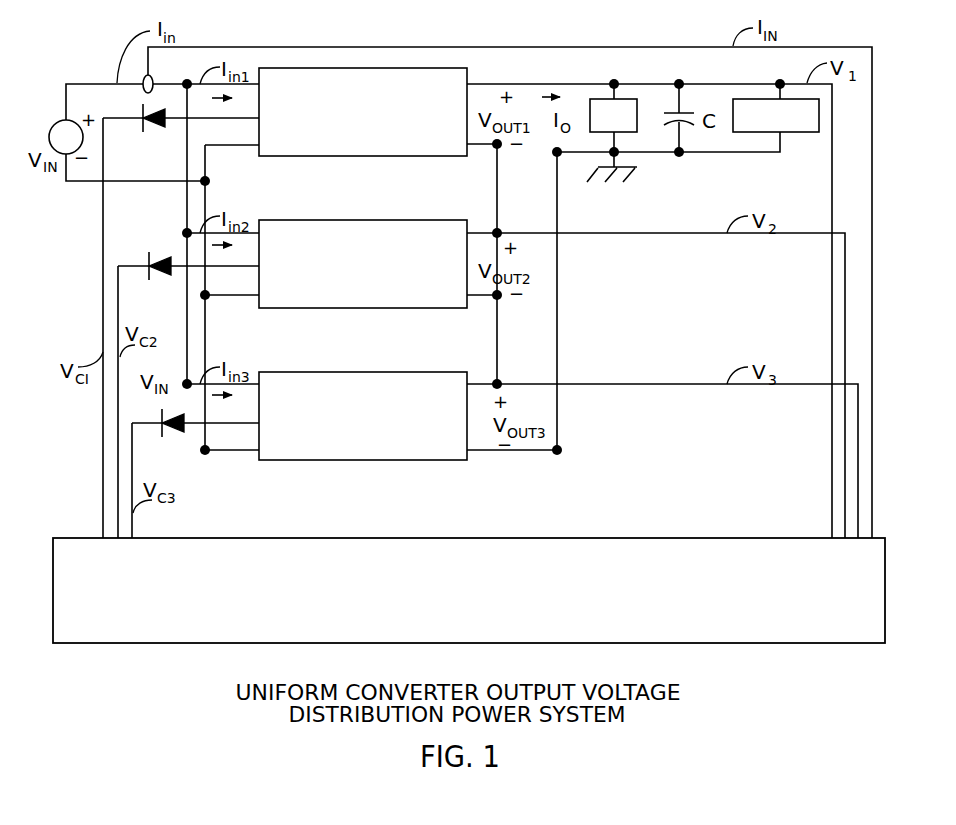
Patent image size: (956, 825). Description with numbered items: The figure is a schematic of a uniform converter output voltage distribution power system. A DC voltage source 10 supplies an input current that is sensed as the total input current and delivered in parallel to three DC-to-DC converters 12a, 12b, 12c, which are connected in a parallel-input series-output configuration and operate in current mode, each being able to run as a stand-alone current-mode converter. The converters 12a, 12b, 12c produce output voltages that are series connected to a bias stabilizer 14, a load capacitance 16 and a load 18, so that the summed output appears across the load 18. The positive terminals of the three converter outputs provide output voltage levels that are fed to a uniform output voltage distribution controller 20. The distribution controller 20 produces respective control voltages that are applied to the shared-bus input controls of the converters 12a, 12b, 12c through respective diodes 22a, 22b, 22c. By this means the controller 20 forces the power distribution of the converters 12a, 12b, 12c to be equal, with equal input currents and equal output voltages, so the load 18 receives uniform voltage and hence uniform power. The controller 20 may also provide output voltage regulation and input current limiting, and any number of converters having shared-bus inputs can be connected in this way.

The DC voltage source 10 is at (71, 118).
The DC-to-DC converter 12a is at (329, 157).
The DC-to-DC converter 12b is at (329, 308).
The DC-to-DC converter 12c is at (329, 460).
The bias stabilizer 14 is at (627, 133).
The load capacitance 16 is at (687, 112).
The load 18 is at (817, 133).
The uniform output voltage distribution controller 20 is at (559, 538).
The diode 22a is at (164, 127).
The diode 22b is at (170, 276).
The diode 22c is at (183, 433).